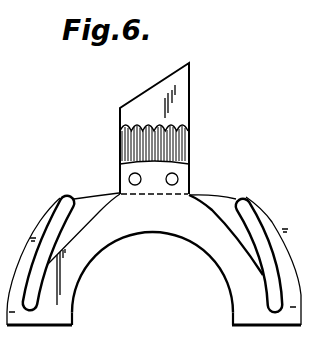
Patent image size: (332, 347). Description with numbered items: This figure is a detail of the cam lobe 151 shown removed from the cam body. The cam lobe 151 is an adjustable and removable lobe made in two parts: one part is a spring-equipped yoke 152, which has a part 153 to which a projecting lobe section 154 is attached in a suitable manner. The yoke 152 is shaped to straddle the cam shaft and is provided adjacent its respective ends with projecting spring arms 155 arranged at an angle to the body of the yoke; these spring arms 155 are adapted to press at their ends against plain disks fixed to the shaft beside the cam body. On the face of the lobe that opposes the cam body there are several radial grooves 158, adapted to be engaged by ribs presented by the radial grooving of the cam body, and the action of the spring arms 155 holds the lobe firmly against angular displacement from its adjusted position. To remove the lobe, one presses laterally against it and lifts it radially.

The cam lobe 151 is at (191, 67).
The spring-equipped yoke 152 is at (132, 228).
The part of the yoke 153 is at (179, 175).
The projecting lobe section 154 is at (181, 103).
The projecting spring arms 155 is at (53, 210).
The radial grooves 158 is at (184, 137).